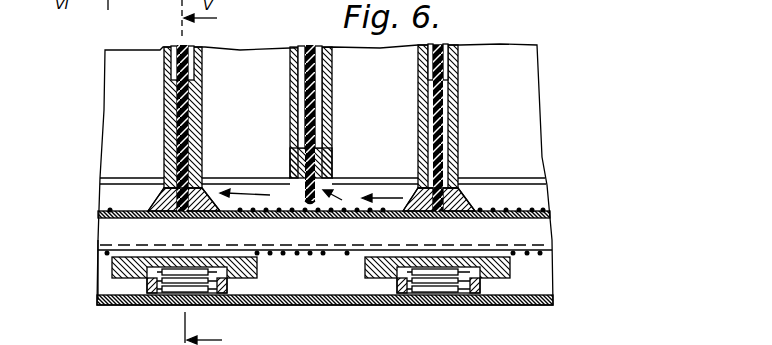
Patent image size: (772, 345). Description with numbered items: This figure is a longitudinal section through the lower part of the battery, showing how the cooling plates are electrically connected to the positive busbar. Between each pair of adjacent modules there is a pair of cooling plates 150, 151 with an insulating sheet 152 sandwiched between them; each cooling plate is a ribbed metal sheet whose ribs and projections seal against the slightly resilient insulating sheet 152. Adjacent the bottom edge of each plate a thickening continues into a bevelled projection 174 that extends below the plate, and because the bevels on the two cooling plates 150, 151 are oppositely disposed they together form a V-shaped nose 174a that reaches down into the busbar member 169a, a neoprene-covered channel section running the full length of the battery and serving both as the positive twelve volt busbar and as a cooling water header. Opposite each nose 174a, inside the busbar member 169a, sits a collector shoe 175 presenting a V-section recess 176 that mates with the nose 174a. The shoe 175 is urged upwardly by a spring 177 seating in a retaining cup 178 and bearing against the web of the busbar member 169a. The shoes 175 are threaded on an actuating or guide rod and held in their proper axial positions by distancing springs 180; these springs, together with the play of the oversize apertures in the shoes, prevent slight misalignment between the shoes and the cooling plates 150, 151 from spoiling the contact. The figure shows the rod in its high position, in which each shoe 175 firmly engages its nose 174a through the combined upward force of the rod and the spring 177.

The cooling plate 150 is at (333, 97).
The cooling plate 151 is at (293, 122).
The insulating sheet 152 is at (188, 107).
The bevelled projection 174 is at (450, 192).
The V-shaped nose 174a is at (430, 190).
The collector shoe 175 is at (457, 207).
The V-section recess 176 is at (165, 189).
The spring 177 is at (442, 292).
The retaining cup 178 is at (142, 306).
The distancing spring 180 is at (342, 253).
The busbar member 169a is at (340, 303).